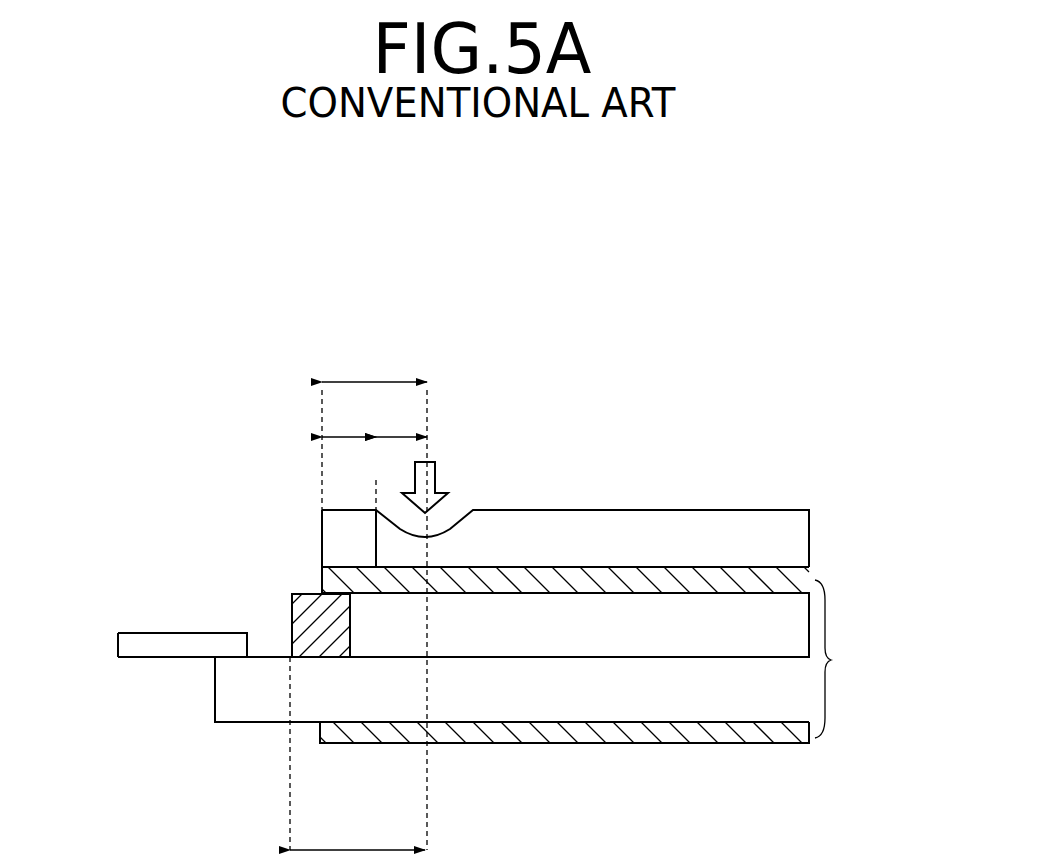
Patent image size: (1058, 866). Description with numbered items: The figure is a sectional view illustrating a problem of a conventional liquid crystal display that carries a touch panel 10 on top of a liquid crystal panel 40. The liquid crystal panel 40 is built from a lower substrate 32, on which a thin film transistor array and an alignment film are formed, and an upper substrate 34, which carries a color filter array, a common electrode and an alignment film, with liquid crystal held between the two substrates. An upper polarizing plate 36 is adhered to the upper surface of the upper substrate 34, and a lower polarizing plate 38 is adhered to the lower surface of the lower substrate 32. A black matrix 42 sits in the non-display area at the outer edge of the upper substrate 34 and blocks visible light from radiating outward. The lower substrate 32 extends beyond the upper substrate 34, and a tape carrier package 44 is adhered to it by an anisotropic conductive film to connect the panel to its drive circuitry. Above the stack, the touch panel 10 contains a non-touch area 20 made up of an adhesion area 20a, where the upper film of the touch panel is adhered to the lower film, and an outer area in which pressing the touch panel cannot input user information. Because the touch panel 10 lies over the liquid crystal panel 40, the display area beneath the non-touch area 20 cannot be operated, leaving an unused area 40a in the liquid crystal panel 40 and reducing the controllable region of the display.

The touch panel 10 is at (803, 543).
The non-touch area 20 is at (374, 598).
The adhesion area 20a is at (375, 456).
The lower substrate 32 is at (257, 700).
The upper substrate 34 is at (800, 625).
The upper polarizing plate 36 is at (342, 578).
The lower polarizing plate 38 is at (473, 728).
The liquid crystal panel 40 is at (846, 659).
The unused area 40a is at (357, 754).
The black matrix 42 is at (302, 626).
The tape carrier package 44 is at (127, 642).